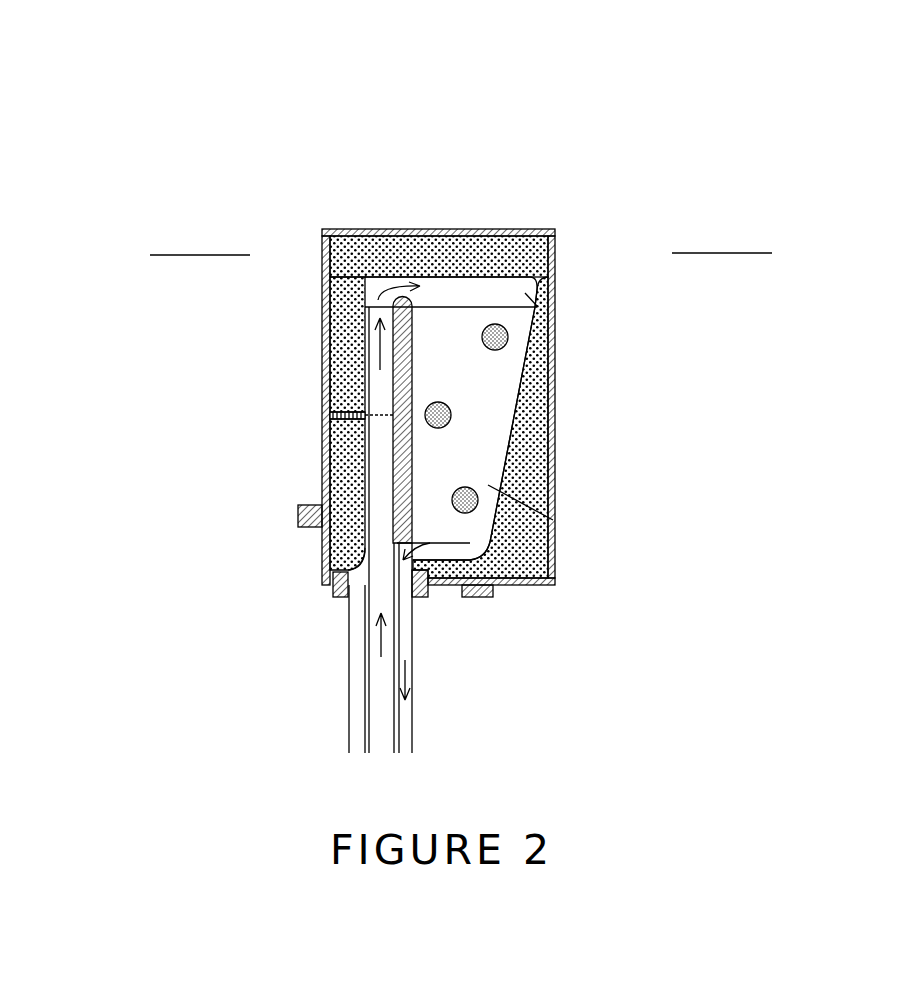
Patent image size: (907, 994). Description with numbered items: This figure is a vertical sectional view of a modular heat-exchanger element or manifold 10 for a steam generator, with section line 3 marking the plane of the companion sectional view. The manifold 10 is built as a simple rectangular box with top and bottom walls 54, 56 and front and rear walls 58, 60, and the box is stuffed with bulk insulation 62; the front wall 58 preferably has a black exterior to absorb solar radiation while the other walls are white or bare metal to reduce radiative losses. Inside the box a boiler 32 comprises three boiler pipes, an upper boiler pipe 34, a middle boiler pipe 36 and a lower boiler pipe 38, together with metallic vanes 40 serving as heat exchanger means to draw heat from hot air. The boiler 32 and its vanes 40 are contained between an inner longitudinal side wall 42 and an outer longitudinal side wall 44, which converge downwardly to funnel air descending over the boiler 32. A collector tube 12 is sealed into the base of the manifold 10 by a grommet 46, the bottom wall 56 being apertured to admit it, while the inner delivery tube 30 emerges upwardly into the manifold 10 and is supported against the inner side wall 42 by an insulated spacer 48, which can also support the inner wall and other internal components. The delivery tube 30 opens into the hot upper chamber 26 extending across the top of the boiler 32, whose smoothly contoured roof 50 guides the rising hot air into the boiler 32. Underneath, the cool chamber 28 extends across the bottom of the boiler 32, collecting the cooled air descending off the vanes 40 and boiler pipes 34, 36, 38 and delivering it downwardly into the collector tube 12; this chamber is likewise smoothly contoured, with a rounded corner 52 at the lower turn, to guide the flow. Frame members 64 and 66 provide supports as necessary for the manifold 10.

The section line 3 is at (173, 245).
The manifold 10 is at (421, 176).
The collector tube 12 is at (349, 697).
The hot upper chamber 26 is at (553, 313).
The cool chamber 28 is at (510, 582).
The inner delivery tube 30 is at (396, 658).
The boiler 32 is at (764, 391).
The upper boiler pipe 34 is at (504, 347).
The middle boiler pipe 36 is at (447, 425).
The lower boiler pipe 38 is at (474, 511).
The metallic vanes 40 is at (553, 520).
The inner longitudinal side wall 42 is at (548, 350).
The outer longitudinal side wall 44 is at (400, 330).
The grommet 46 is at (338, 597).
The insulated spacer 48 is at (338, 413).
The smoothly contoured roof 50 is at (488, 278).
The rounded corner 52 is at (338, 552).
The top wall 54 is at (330, 229).
The bottom wall 56 is at (496, 598).
The front wall 58 is at (553, 293).
The rear wall 60 is at (326, 248).
The bulk insulation 62 is at (350, 312).
The frame member 64 is at (470, 600).
The frame member 66 is at (299, 510).